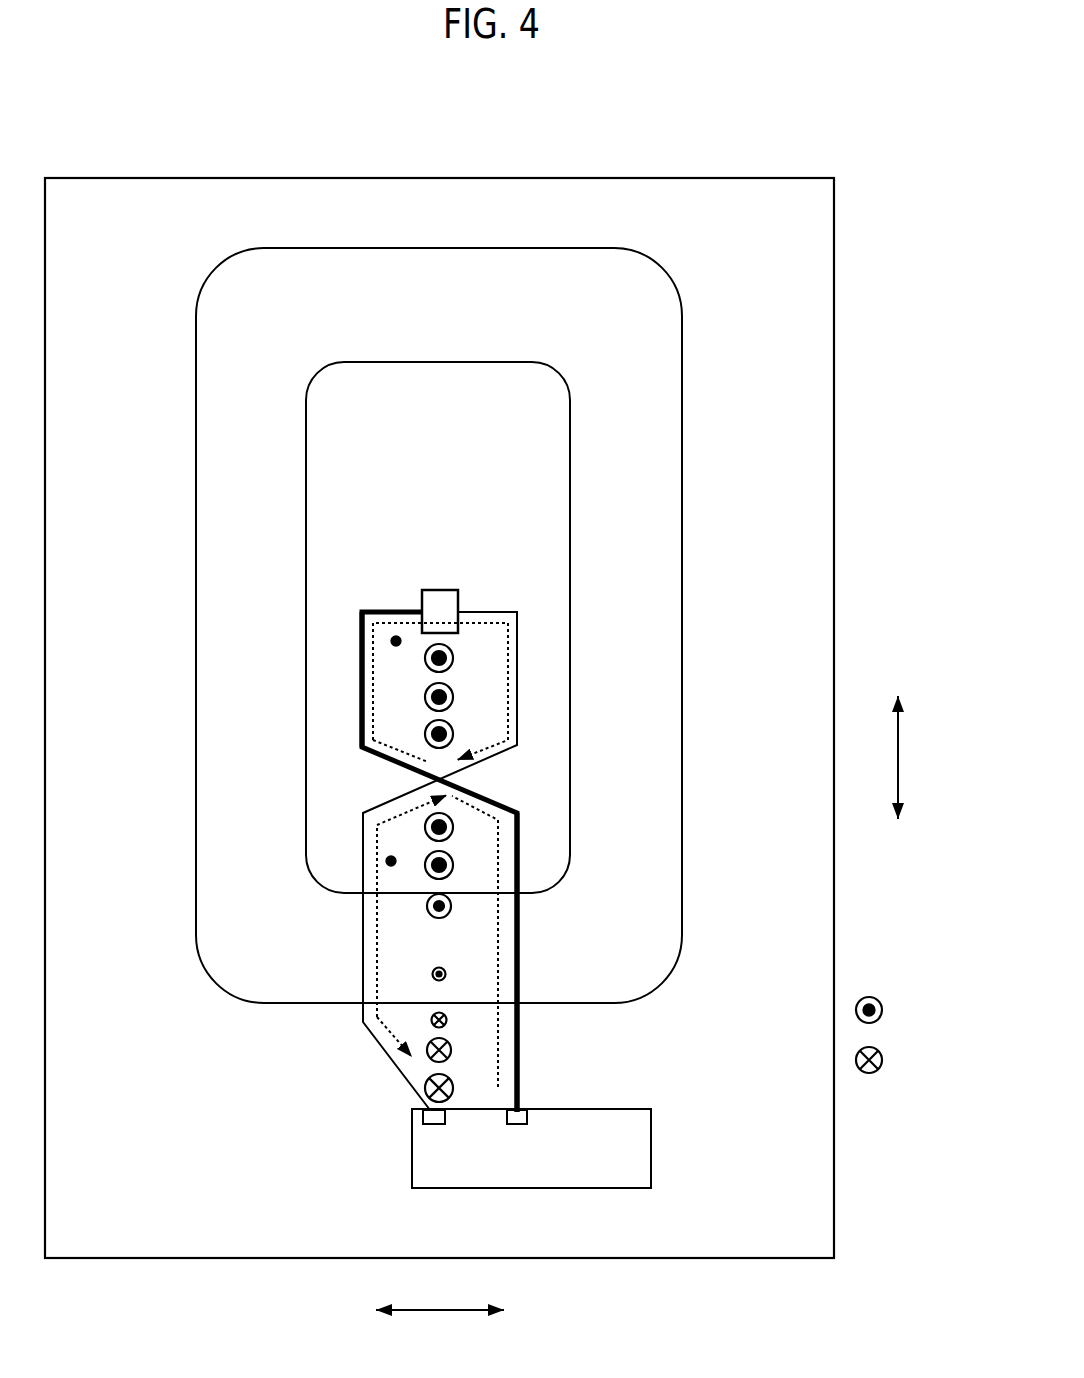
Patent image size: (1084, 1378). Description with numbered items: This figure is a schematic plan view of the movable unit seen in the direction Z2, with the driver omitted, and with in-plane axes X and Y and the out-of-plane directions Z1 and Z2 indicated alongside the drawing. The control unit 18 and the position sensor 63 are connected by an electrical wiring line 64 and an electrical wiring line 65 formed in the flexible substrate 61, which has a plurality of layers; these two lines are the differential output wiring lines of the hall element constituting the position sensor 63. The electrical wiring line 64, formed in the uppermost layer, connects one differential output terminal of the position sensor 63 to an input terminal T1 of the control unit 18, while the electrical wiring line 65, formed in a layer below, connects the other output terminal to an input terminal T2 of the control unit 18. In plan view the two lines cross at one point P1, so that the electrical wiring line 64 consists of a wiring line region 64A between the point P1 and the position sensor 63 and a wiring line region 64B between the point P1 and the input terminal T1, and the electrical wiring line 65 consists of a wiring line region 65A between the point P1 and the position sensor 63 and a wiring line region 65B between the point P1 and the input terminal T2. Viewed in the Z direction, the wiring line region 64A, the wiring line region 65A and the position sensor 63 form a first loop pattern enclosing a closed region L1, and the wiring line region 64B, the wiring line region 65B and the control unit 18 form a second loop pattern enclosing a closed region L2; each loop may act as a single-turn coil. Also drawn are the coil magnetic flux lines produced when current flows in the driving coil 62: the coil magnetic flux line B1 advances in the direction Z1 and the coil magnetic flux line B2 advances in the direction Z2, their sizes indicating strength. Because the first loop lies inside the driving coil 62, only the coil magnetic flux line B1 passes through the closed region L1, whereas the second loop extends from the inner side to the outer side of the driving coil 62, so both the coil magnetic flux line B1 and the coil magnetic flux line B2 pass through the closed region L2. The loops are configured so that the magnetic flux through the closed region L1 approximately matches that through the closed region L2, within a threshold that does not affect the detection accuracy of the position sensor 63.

The flexible substrate 61 is at (834, 228).
The driving coil 62 is at (420, 270).
The position sensor 63 is at (460, 595).
The electrical wiring line 64 is at (358, 632).
The wiring line region 64A is at (362, 690).
The wiring line region 64B is at (519, 847).
The electrical wiring line 65 is at (522, 643).
The wiring line region 65A is at (518, 690).
The wiring line region 65B is at (363, 965).
The control unit 18 is at (412, 1152).
The closed region L1 is at (396, 641).
The closed region L2 is at (391, 861).
The point P1 is at (437, 778).
The coil magnetic flux line B1 is at (453, 656).
The coil magnetic flux line B2 is at (453, 1078).
The input terminal T1 is at (522, 1112).
The input terminal T2 is at (423, 1113).
The direction Z1 is at (889, 1010).
The direction Z2 is at (889, 1060).
The direction X is at (440, 1331).
The direction Y is at (913, 757).